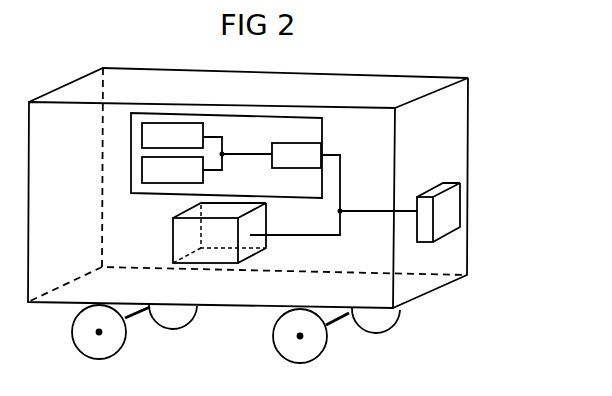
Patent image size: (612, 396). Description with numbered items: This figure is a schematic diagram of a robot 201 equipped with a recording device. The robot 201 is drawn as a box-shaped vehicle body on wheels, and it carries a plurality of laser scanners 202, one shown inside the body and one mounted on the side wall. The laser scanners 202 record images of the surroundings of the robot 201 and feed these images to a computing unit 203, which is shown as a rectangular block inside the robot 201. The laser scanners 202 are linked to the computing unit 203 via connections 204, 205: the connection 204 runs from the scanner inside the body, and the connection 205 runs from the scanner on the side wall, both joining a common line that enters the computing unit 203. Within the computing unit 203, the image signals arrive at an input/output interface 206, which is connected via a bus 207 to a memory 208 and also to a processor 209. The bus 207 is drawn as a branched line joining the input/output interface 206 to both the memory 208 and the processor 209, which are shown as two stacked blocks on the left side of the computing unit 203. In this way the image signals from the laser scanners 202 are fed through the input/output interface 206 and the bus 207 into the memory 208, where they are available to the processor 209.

The robot 201 is at (484, 82).
The laser scanner 202 is at (185, 233).
The computing unit 203 is at (253, 155).
The connection 204 is at (288, 237).
The connection 205 is at (362, 212).
The input/output interface 206 is at (296, 155).
The bus 207 is at (222, 152).
The memory 208 is at (172, 137).
The processor 209 is at (172, 171).